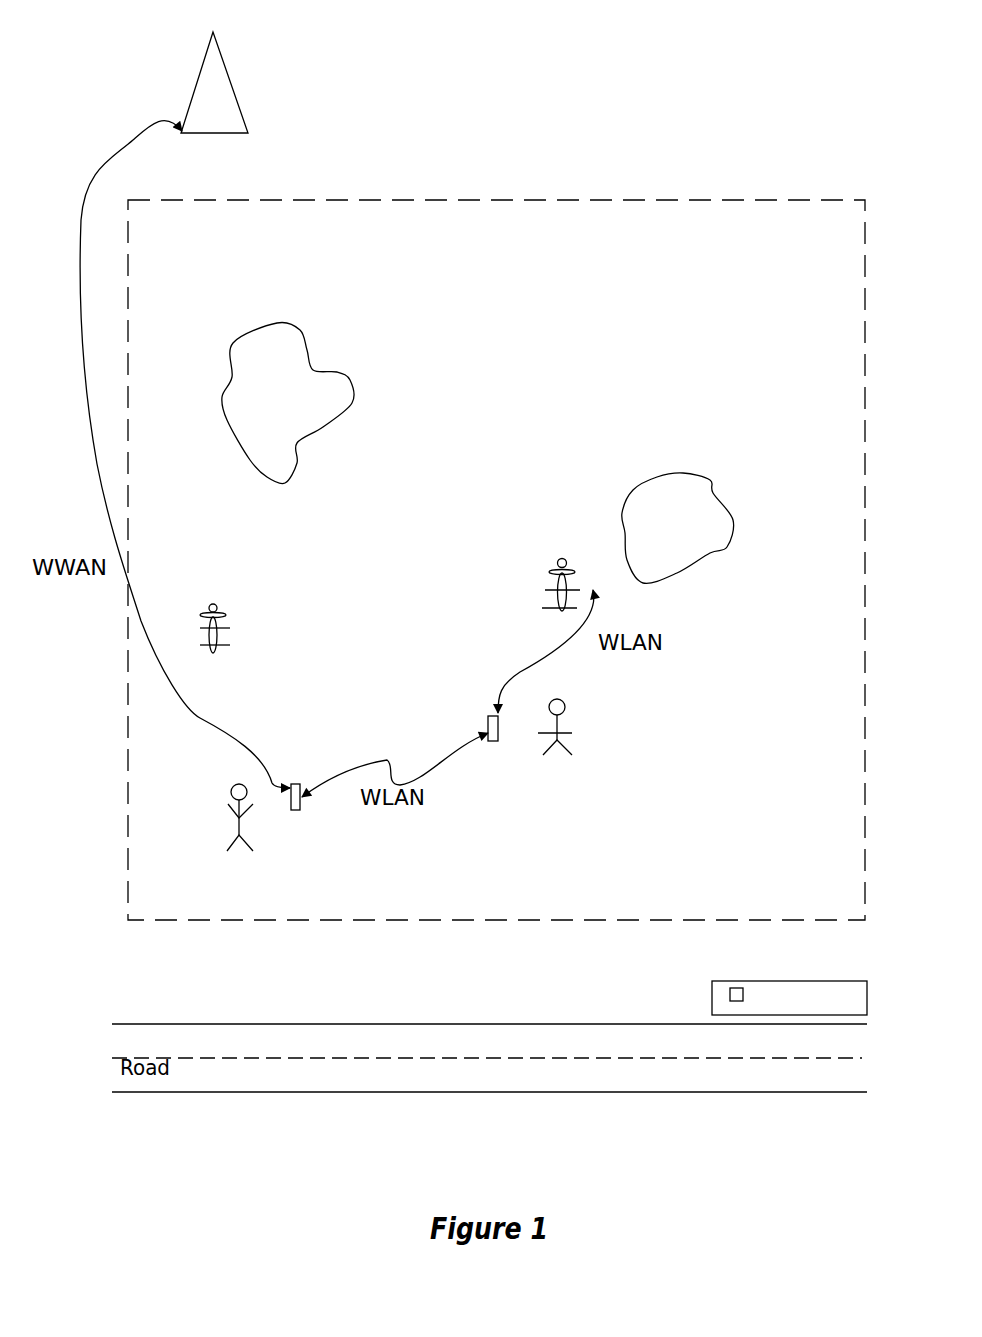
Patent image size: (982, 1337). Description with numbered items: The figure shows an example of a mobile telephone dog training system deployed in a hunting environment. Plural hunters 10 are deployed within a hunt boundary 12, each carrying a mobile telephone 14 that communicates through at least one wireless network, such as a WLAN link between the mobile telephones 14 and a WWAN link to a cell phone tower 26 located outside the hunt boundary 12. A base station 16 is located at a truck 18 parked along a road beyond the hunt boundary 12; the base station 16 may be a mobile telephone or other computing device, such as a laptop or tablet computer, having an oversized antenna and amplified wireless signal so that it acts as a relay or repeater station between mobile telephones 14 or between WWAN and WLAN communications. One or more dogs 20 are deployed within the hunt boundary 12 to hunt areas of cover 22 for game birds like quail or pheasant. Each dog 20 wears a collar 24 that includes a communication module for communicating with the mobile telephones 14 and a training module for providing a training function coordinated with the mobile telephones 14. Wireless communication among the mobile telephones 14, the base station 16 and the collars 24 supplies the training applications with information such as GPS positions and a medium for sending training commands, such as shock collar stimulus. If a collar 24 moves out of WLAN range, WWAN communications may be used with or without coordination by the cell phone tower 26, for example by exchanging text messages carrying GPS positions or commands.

The hunter 10 is at (557, 768).
The hunt boundary 12 is at (743, 200).
The mobile telephone 14 is at (394, 759).
The base station 16 is at (728, 988).
The truck 18 is at (789, 998).
The dog 20 is at (542, 590).
The cover 22 is at (478, 452).
The collar 24 is at (548, 572).
The cell phone tower 26 is at (295, 71).